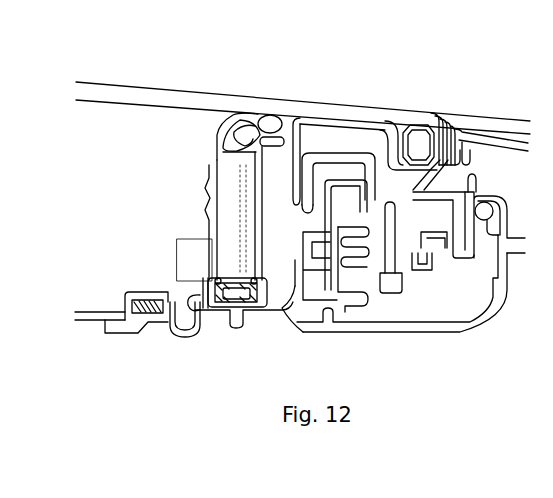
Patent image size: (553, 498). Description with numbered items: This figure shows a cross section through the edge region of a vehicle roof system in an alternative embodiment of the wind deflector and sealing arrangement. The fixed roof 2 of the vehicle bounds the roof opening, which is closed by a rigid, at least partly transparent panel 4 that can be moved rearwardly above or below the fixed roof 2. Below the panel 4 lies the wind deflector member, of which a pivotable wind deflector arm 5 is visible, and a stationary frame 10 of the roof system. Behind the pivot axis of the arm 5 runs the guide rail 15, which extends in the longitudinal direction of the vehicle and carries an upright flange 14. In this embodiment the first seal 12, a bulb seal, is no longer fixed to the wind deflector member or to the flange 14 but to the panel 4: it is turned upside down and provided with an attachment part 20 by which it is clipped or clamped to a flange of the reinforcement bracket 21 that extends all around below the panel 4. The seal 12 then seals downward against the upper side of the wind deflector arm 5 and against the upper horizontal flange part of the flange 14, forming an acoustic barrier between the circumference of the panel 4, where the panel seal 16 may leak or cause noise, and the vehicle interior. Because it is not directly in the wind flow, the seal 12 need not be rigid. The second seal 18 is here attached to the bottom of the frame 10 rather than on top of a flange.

The fixed roof 2 is at (498, 112).
The panel 4 is at (102, 90).
The wind deflector arm 5 is at (125, 335).
The frame 10 is at (462, 337).
The first seal 12 is at (217, 160).
The upright flange 14 is at (263, 335).
The guide rail 15 is at (335, 333).
The panel seal 16 is at (428, 118).
The second seal 18 is at (227, 333).
The attachment part 20 is at (246, 114).
The reinforcement bracket 21 is at (305, 121).